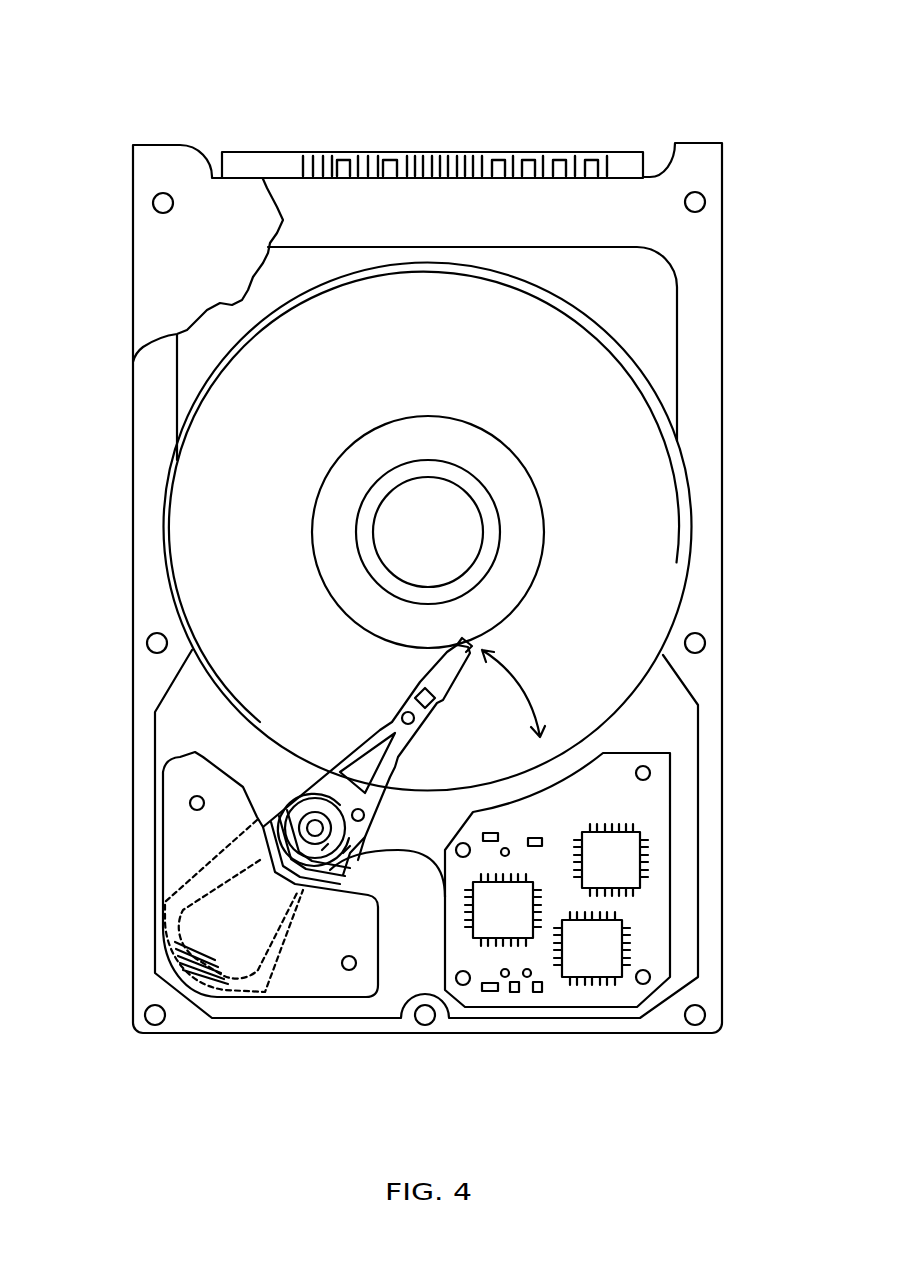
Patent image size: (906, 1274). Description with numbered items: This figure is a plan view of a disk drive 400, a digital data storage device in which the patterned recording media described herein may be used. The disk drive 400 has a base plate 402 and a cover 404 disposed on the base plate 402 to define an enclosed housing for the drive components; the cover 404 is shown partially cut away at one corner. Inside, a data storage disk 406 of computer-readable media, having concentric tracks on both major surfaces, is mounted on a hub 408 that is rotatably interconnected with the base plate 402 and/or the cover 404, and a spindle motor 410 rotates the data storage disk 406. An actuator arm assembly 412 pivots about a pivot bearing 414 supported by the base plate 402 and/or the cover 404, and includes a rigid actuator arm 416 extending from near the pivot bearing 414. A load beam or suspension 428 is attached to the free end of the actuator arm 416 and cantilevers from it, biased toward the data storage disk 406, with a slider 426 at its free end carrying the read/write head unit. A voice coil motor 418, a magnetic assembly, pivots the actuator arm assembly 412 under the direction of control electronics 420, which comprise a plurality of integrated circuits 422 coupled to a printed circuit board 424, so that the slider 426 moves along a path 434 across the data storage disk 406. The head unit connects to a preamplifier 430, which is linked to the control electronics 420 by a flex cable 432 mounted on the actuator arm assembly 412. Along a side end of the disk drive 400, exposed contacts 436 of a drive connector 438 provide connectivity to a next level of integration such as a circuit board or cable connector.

The disk drive 400 is at (176, 37).
The base plate 402 is at (155, 602).
The cover 404 is at (200, 260).
The data storage disk 406 is at (283, 422).
The hub 408 is at (320, 490).
The spindle motor 410 is at (400, 545).
The actuator arm assembly 412 is at (388, 803).
The pivot bearing 414 is at (287, 830).
The actuator arm 416 is at (340, 773).
The voice coil motor 418 is at (155, 920).
The control electronics 420 is at (670, 1040).
The integrated circuit 422 is at (613, 858).
The printed circuit board 424 is at (640, 918).
The slider 426 is at (470, 637).
The suspension 428 is at (420, 682).
The preamplifier 430 is at (343, 853).
The flex cable 432 is at (322, 850).
The path 434 is at (522, 692).
The exposed contacts 436 is at (605, 155).
The drive connector 438 is at (230, 160).